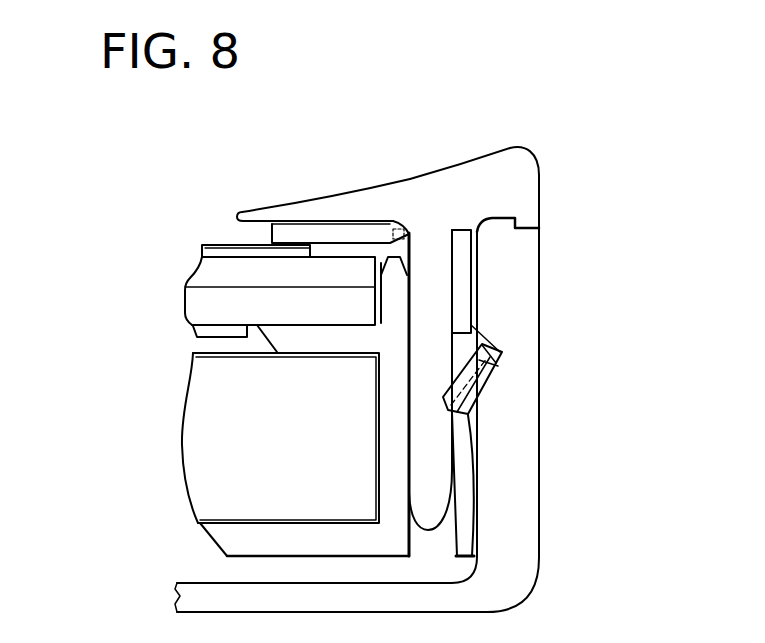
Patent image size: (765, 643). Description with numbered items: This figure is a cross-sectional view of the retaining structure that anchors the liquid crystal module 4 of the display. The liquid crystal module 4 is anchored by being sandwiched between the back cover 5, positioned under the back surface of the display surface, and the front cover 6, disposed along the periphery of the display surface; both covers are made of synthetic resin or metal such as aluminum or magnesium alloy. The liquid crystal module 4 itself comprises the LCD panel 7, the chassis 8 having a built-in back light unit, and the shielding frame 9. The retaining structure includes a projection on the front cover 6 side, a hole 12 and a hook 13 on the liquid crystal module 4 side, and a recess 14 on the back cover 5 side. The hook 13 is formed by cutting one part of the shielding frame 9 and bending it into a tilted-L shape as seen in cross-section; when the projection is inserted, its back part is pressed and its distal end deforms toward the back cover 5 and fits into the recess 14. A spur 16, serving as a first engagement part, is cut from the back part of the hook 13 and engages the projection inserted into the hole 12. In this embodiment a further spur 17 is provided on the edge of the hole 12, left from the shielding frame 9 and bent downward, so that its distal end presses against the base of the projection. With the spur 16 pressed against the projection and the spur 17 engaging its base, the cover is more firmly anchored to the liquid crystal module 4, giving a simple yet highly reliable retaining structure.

The liquid crystal module 4 is at (123, 431).
The back cover 5 is at (523, 503).
The front cover 6 is at (472, 157).
The LCD panel 7 is at (207, 306).
The chassis 8 is at (232, 538).
The shielding frame 9 is at (327, 228).
The hole 12 is at (441, 234).
The hook 13 is at (460, 437).
The recess 14 is at (480, 340).
The spur 16 is at (443, 397).
The spur 17 is at (410, 232).